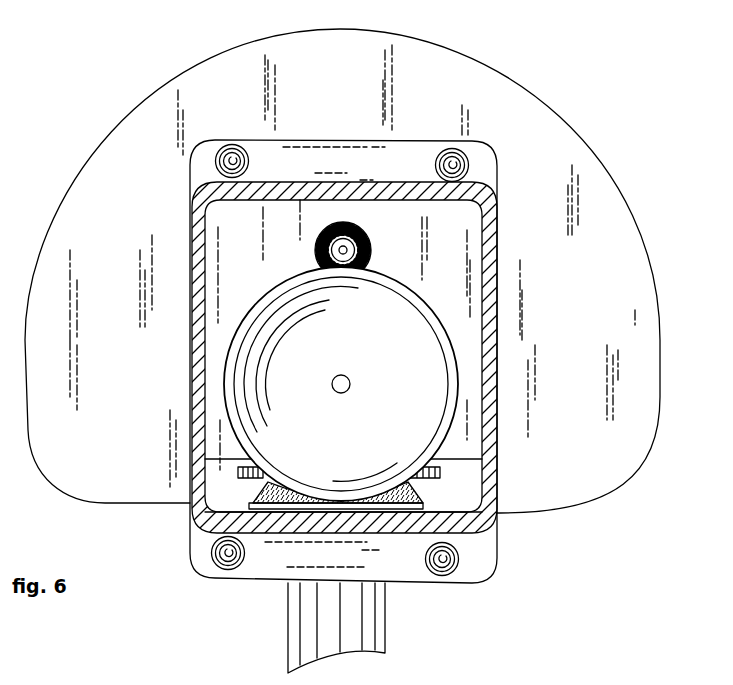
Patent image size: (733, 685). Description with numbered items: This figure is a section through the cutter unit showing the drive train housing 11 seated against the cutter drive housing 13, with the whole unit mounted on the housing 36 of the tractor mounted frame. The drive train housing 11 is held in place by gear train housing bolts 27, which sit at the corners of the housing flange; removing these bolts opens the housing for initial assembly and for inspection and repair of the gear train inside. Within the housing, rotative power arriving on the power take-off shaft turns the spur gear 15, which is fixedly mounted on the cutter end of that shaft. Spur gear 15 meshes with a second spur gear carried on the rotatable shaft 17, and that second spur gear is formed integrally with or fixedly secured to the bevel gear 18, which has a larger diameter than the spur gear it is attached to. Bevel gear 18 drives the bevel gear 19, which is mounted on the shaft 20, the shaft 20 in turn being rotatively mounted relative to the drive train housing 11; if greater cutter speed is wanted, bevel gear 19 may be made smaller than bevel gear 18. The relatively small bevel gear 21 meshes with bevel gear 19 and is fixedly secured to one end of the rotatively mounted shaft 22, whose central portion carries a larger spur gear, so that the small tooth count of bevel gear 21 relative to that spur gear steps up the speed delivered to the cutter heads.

The drive train housing 11 is at (193, 343).
The cutter drive housing 13 is at (432, 72).
The spur gear 15 is at (258, 478).
The rotatable shaft 17 is at (330, 516).
The bevel gear 18 is at (410, 498).
The bevel gear 19 is at (425, 402).
The shaft 20 is at (334, 391).
The bevel gear 21 is at (364, 249).
The shaft 22 is at (332, 250).
The gear train housing bolts 27 is at (234, 156).
The housing 36 is at (373, 644).